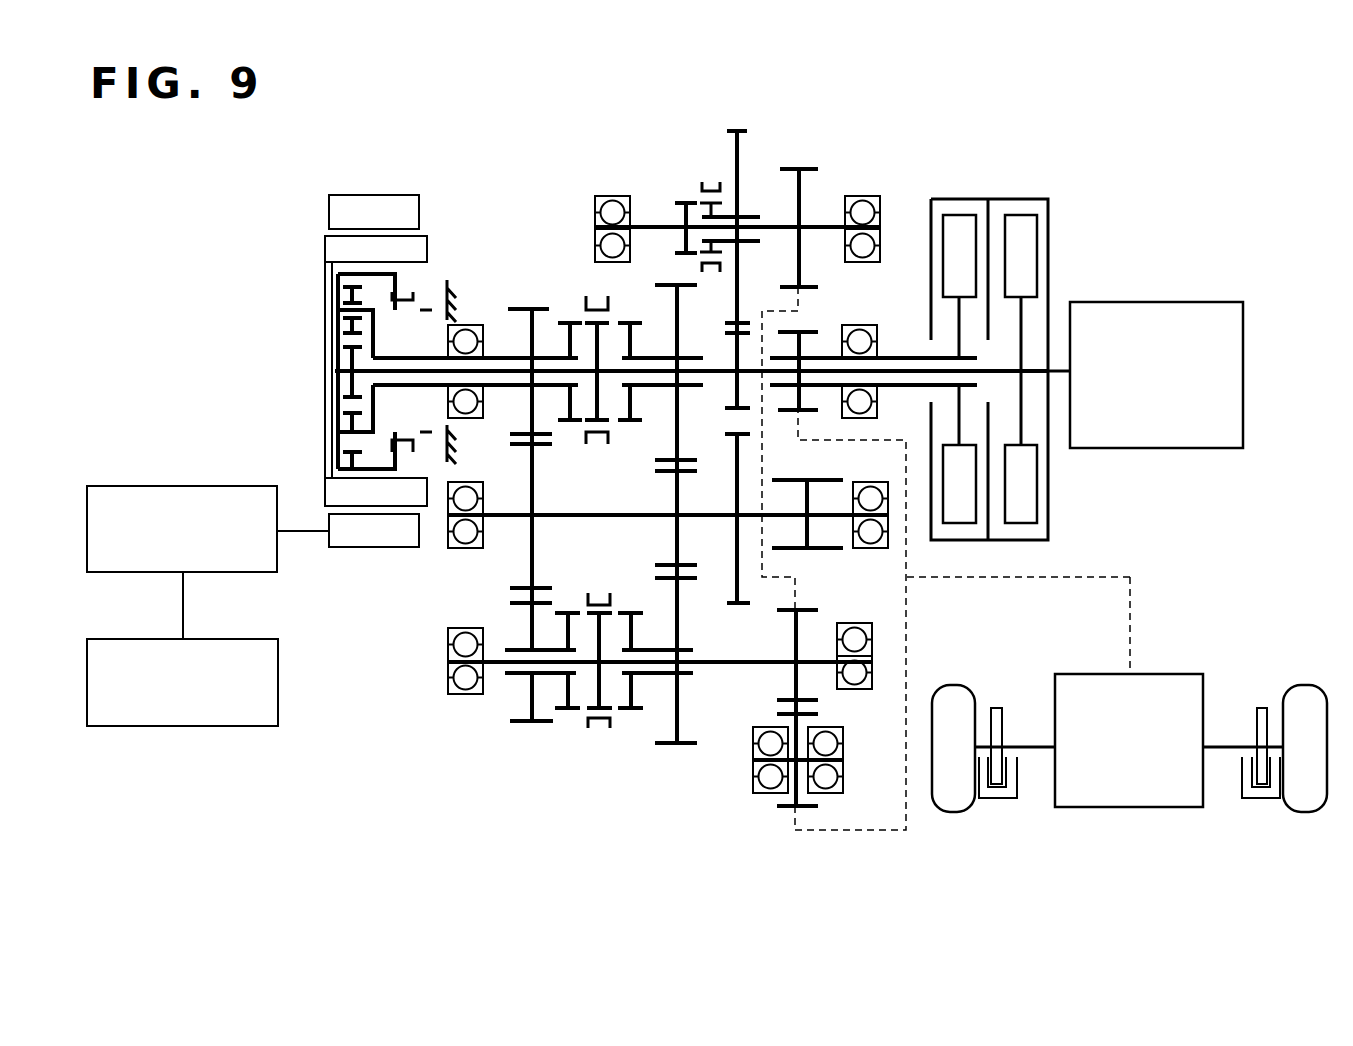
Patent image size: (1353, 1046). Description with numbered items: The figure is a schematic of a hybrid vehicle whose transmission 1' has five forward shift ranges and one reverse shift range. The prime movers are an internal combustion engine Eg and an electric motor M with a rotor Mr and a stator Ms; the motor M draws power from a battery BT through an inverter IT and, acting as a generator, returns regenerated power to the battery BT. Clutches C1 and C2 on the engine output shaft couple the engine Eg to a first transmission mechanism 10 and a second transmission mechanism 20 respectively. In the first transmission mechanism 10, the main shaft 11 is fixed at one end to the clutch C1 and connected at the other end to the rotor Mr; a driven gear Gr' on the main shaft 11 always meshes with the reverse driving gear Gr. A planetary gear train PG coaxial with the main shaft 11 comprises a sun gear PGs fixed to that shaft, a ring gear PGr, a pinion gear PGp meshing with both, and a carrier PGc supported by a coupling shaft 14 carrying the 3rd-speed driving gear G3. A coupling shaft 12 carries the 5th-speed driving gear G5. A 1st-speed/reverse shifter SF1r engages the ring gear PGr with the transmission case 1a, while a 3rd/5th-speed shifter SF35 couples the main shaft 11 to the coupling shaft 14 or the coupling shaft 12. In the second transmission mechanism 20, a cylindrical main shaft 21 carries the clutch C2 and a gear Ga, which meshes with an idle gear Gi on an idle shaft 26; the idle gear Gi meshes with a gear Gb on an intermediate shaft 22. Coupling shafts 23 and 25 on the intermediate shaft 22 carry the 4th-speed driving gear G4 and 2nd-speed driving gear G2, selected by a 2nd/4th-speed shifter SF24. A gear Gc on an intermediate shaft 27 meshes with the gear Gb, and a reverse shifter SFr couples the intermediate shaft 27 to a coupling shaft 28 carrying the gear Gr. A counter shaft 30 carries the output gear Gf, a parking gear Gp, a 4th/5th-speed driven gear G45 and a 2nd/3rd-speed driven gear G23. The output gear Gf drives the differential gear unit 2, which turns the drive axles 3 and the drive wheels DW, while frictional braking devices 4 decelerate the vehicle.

The transmission 1' is at (702, 229).
The transmission case 1a is at (448, 290).
The first transmission mechanism 10 is at (513, 232).
The main shaft 11 is at (917, 368).
The coupling shaft 12 is at (660, 350).
The coupling shaft 14 is at (500, 350).
The second transmission mechanism 20 is at (430, 735).
The main shaft 21 is at (893, 352).
The intermediate shaft 22 is at (756, 670).
The coupling shaft 23 is at (655, 676).
The coupling shaft 25 is at (515, 675).
The idle shaft 26 is at (756, 780).
The intermediate shaft 27 is at (815, 227).
The coupling shaft 28 is at (750, 212).
The counter shaft 30 is at (518, 520).
The differential gear unit 2 is at (1130, 807).
The drive axles 3 is at (1037, 750).
The braking devices 4 is at (1006, 700).
The electric motor M is at (306, 200).
The stator Ms is at (358, 195).
The rotor Mr is at (325, 244).
The planetary gear train PG is at (278, 378).
The carrier PGc is at (338, 290).
The pinion gear PGp is at (338, 330).
The sun gear PGs is at (338, 357).
The ring gear PGr is at (338, 469).
The 1st-speed/reverse shifter SF1r is at (426, 282).
The 3rd/5th-speed shifter SF35 is at (580, 292).
The 2nd/4th-speed shifter SF24 is at (580, 738).
The reverse shifter SFr is at (700, 182).
The 2nd-speed driving gear G2 is at (517, 725).
The 3rd-speed driving gear G3 is at (532, 305).
The 4th-speed driving gear G4 is at (690, 745).
The 5th-speed driving gear G5 is at (655, 460).
The 2nd/3rd-speed driven gear G23 is at (535, 590).
The 4th/5th-speed driven gear G45 is at (660, 566).
The reverse driving gear Gr is at (757, 250).
The driven gear Gr' is at (719, 510).
The parking gear Gp is at (735, 605).
The gear Gc is at (790, 168).
The gear Ga is at (810, 332).
The output gear Gf is at (830, 480).
The gear Gb is at (818, 610).
The idle gear Gi is at (785, 808).
The clutch C1 is at (1020, 195).
The clutch C2 is at (957, 195).
The internal combustion engine Eg is at (1152, 302).
The inverter IT is at (148, 486).
The battery BT is at (152, 639).
The drive wheels DW is at (955, 812).